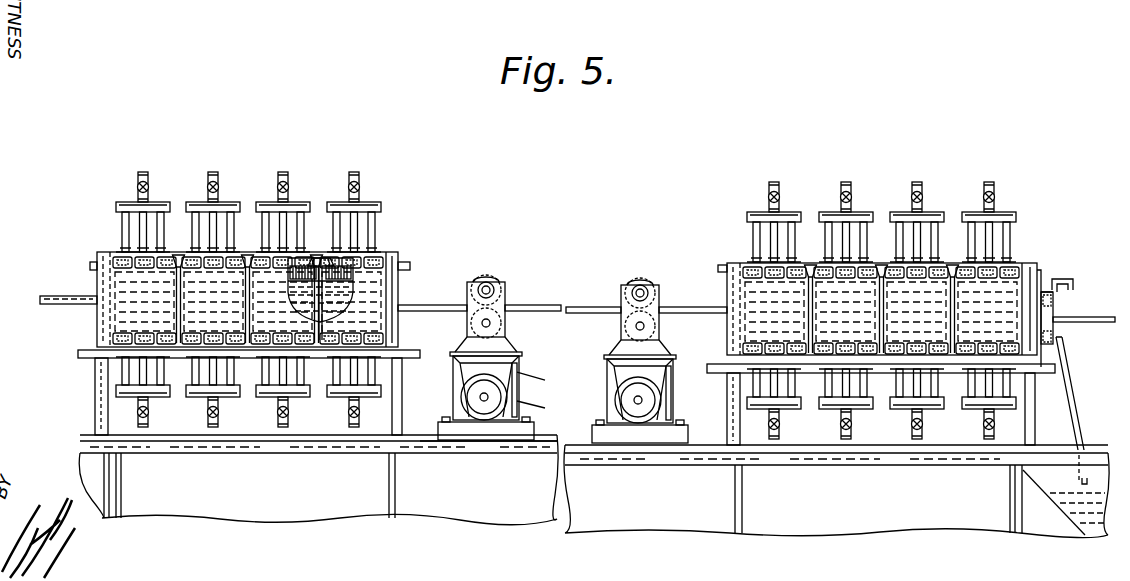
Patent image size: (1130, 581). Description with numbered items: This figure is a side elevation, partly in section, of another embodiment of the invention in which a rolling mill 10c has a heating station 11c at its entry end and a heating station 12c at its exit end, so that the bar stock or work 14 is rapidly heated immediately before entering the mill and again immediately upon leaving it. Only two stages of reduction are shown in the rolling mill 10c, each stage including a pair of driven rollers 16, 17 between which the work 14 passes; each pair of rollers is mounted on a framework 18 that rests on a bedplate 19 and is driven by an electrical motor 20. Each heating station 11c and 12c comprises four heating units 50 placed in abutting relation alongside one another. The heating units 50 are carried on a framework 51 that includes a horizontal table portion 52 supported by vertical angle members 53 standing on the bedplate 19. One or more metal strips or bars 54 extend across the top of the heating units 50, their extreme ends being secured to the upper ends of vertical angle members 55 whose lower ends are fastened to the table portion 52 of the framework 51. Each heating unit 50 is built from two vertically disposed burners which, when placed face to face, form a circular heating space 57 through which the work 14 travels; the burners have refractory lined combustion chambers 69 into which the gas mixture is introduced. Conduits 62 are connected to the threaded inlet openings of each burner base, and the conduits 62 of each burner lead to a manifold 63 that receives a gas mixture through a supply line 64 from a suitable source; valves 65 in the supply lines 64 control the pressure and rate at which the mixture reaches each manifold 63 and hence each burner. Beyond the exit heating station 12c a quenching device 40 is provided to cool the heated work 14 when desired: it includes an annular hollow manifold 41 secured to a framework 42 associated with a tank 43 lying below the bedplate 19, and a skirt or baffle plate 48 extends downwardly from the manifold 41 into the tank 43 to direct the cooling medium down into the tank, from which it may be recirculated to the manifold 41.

The rolling mill 10c is at (563, 268).
The heating station 11c is at (106, 243).
The heating station 12c is at (738, 248).
The work 14 is at (50, 296).
The driven roller 16 is at (493, 279).
The driven roller 17 is at (507, 328).
The framework 18 is at (605, 364).
The bedplate 19 is at (542, 440).
The electrical motor 20 is at (472, 390).
The quenching device 40 is at (1075, 375).
The hollow manifold 41 is at (1055, 302).
The framework 42 is at (1075, 281).
The tank 43 is at (1062, 511).
The baffle plate 48 is at (1080, 421).
The heating unit 50 is at (392, 256).
The framework 51 is at (248, 372).
The table portion 52 is at (407, 352).
The vertical angle member 53 is at (95, 409).
The metal strip 54 is at (577, 282).
The vertical angle member 55 is at (408, 268).
The heating space 57 is at (192, 296).
The conduit 62 is at (152, 230).
The manifold 63 is at (118, 203).
The supply line 64 is at (209, 178).
The valve 65 is at (152, 187).
The combustion chamber 69 is at (288, 286).